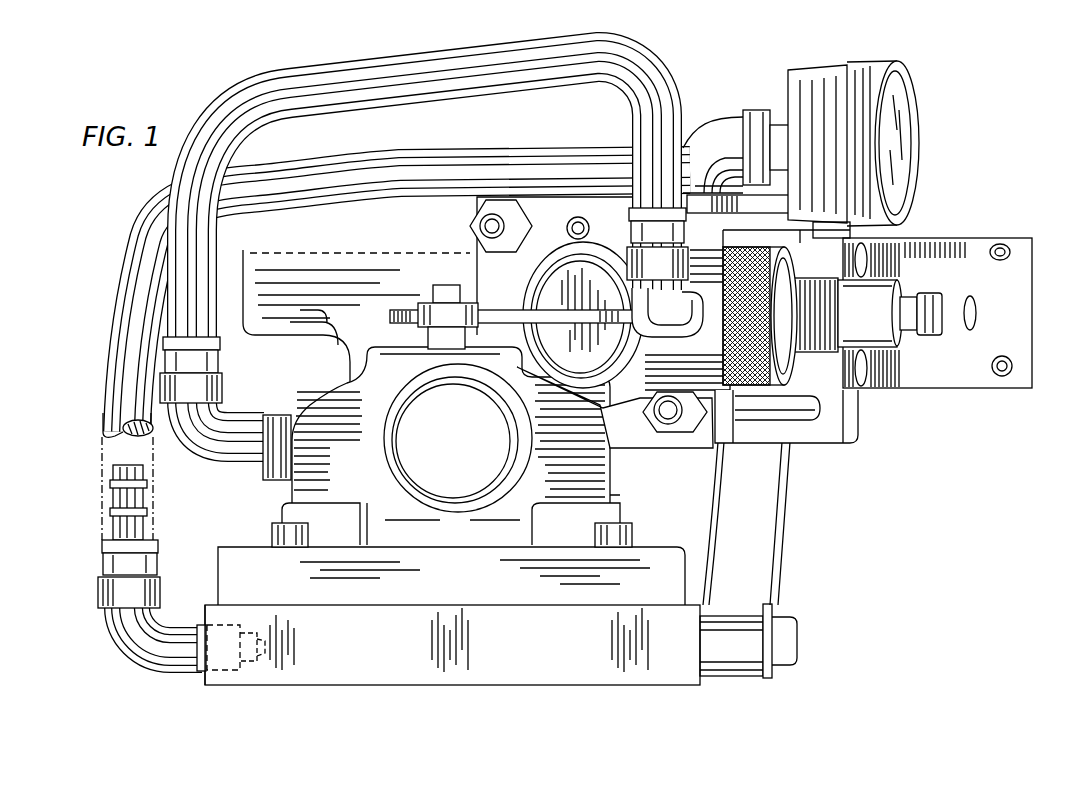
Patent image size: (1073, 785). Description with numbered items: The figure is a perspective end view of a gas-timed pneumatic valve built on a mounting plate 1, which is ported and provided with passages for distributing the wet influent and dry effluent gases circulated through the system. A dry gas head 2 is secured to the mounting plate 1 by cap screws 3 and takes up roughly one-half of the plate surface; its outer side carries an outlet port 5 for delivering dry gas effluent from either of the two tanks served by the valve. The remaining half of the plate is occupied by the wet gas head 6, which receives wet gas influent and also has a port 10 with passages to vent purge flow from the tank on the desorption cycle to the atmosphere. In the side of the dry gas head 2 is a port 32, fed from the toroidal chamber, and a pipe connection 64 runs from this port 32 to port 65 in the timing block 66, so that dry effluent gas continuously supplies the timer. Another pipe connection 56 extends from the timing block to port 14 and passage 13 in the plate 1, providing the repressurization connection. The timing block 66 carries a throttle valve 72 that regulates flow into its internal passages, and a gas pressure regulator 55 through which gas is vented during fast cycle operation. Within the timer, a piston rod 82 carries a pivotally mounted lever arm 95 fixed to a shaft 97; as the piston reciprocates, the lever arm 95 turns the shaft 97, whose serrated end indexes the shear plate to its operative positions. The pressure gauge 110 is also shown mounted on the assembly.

The mounting plate 1 is at (418, 680).
The dry gas head 2 is at (228, 558).
The cap screws 3 is at (298, 536).
The outlet port 5 is at (462, 457).
The wet gas head 6 is at (463, 269).
The port 10 is at (277, 312).
The passage 13 is at (267, 653).
The port 14 is at (200, 672).
The port 32 is at (277, 416).
The gas pressure regulator 55 is at (937, 304).
The pipe connection 56 is at (110, 372).
The pipe connection 64 is at (241, 107).
The port 65 is at (651, 381).
The timing block 66 is at (832, 382).
The throttle valve 72 is at (975, 328).
The piston rod 82 is at (575, 265).
The lever arm 95 is at (512, 300).
The shaft 97 is at (440, 297).
The pressure gauge 110 is at (907, 78).